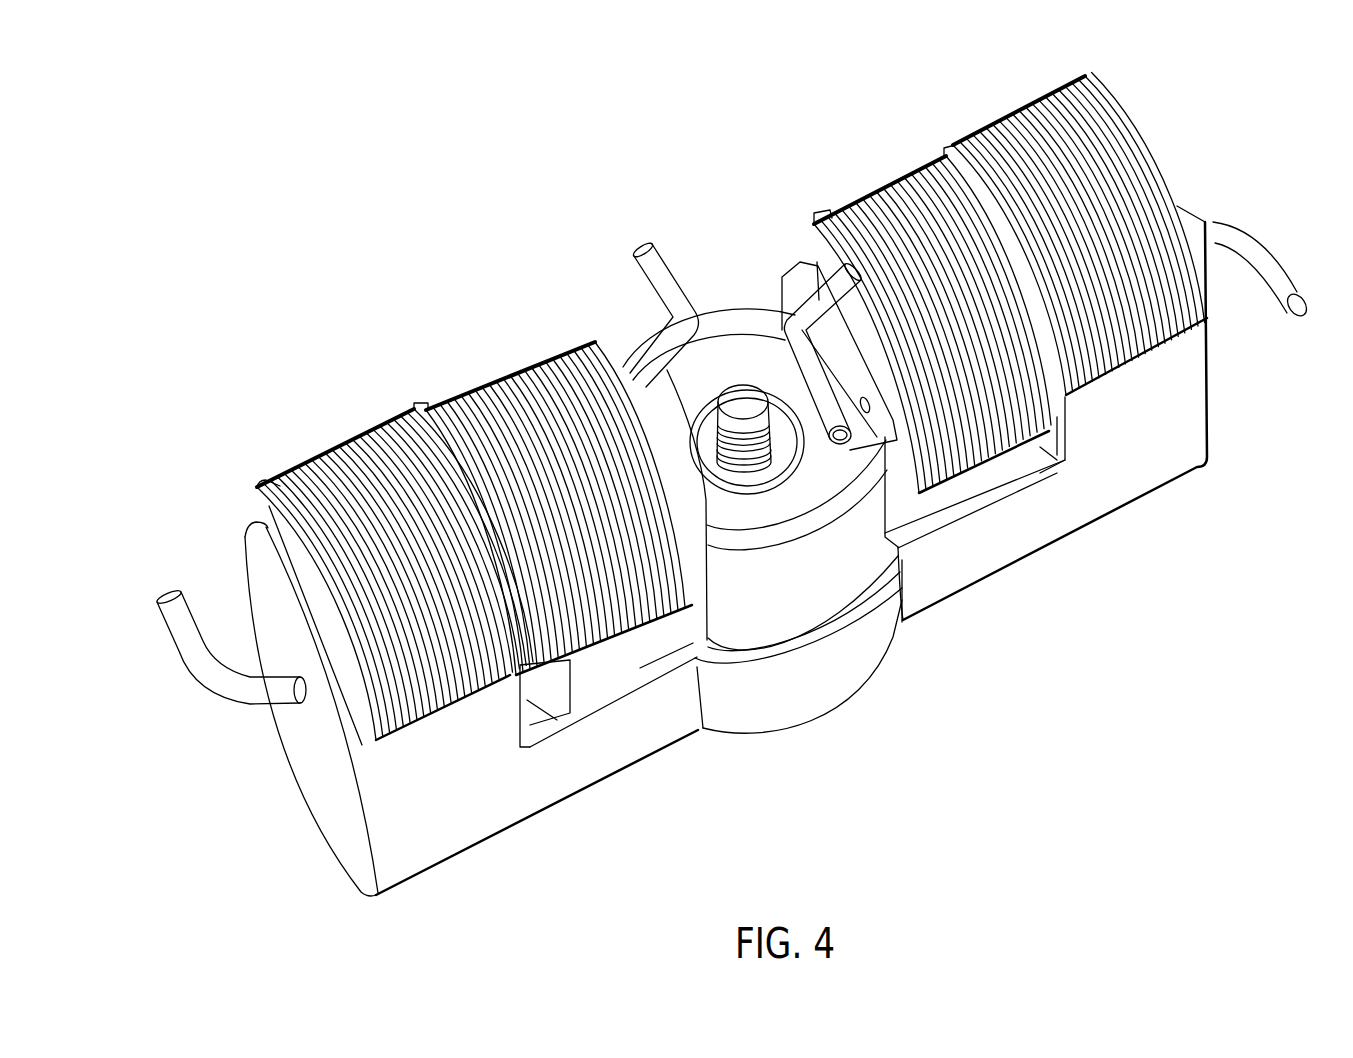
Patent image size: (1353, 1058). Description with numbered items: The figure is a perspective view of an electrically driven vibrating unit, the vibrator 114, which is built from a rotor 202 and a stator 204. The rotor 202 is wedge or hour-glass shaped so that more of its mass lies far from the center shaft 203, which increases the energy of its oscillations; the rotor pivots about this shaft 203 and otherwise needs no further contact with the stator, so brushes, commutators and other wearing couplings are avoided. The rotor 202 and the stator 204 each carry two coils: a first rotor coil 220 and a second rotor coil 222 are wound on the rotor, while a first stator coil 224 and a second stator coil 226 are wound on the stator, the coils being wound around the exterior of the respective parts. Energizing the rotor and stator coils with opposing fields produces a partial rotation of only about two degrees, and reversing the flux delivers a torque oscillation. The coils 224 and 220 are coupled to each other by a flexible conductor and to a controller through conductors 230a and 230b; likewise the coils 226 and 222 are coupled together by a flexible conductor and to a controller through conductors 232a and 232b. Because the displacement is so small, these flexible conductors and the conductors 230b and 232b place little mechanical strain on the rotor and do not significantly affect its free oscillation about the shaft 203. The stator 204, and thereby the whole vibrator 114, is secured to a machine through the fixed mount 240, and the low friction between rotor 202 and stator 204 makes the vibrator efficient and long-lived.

The vibrator 114 is at (340, 318).
The rotor 202 is at (719, 298).
The center shaft 203 is at (735, 403).
The stator 204 is at (1192, 115).
The first rotor coil 220 is at (886, 196).
The second rotor coil 222 is at (513, 390).
The first stator coil 224 is at (1037, 117).
The second stator coil 226 is at (351, 445).
The conductor 230a is at (1259, 266).
The conductor 230b is at (805, 300).
The conductor 232a is at (212, 678).
The conductor 232b is at (672, 285).
The fixed mount 240 is at (321, 784).